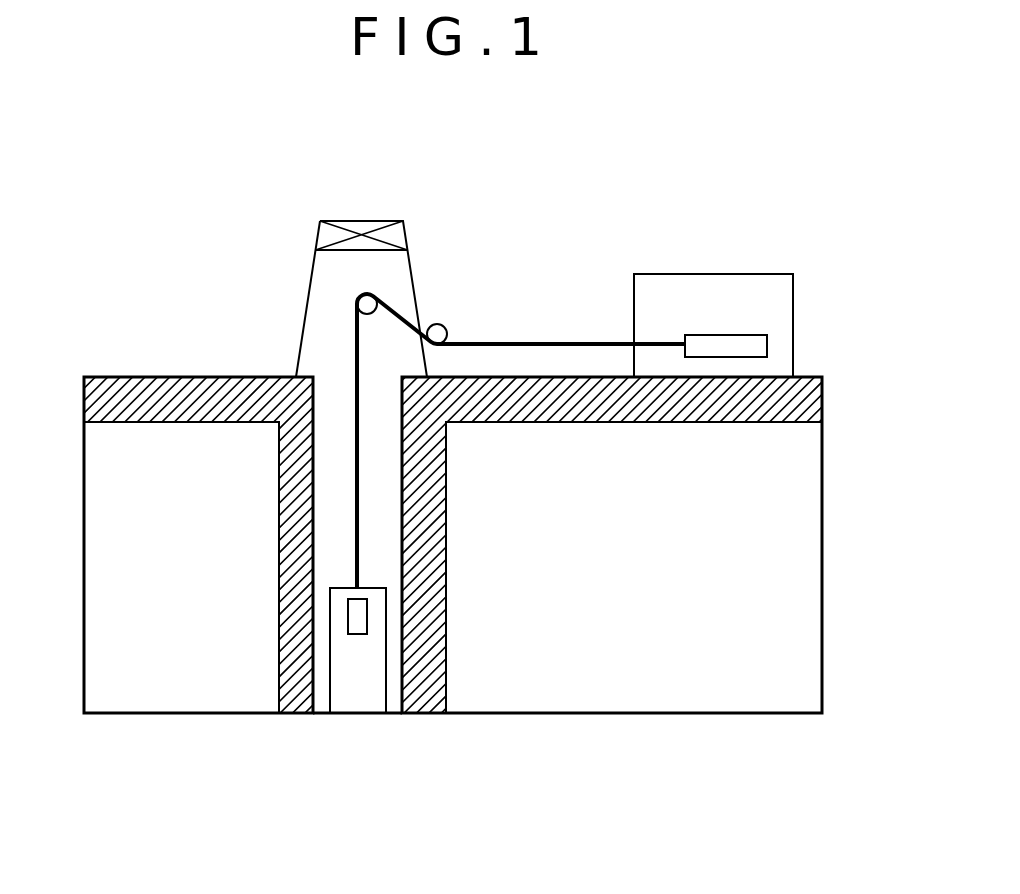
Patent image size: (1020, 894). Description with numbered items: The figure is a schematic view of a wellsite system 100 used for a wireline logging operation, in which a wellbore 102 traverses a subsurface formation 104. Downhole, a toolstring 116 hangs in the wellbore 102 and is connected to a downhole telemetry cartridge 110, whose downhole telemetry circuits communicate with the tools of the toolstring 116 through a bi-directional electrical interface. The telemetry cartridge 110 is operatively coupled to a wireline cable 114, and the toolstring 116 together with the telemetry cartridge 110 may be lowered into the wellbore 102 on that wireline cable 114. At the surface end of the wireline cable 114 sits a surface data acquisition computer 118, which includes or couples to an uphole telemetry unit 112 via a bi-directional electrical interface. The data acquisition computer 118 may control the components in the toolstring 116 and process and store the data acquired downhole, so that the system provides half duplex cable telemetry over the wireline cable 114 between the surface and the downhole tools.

The wellsite system 100 is at (737, 177).
The wellbore 102 is at (437, 550).
The subsurface formation 104 is at (670, 563).
The downhole telemetry cartridge 110 is at (355, 634).
The uphole telemetry unit 112 is at (715, 335).
The wireline cable 114 is at (517, 345).
The toolstring 116 is at (342, 713).
The surface data acquisition computer 118 is at (710, 274).